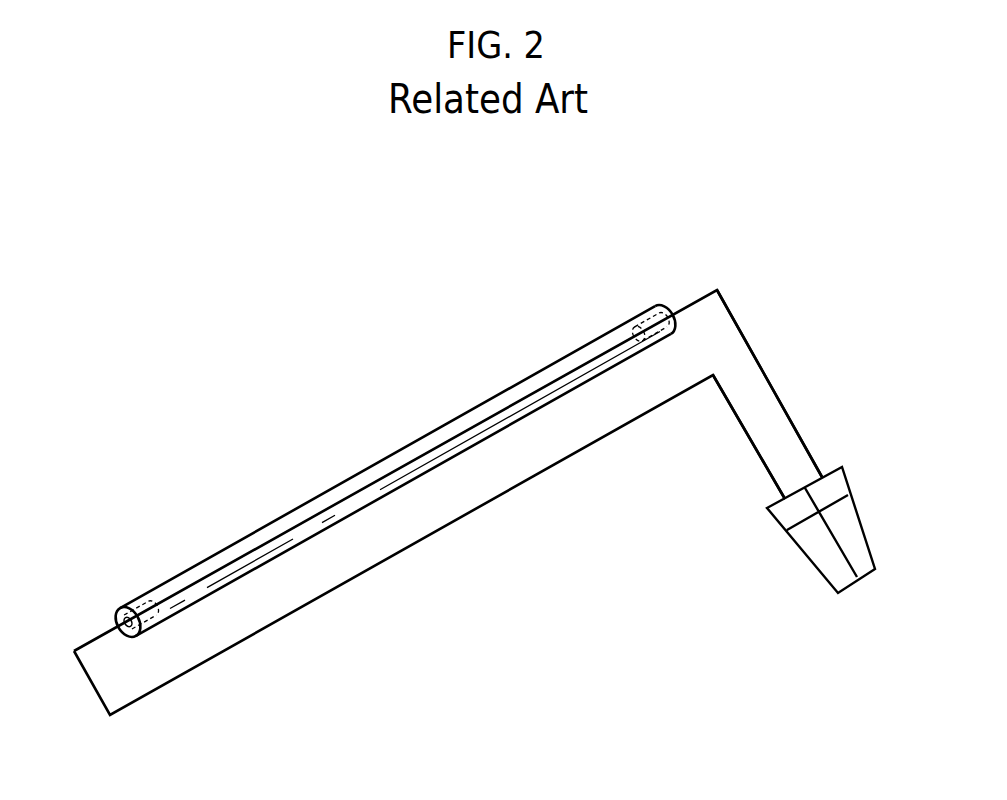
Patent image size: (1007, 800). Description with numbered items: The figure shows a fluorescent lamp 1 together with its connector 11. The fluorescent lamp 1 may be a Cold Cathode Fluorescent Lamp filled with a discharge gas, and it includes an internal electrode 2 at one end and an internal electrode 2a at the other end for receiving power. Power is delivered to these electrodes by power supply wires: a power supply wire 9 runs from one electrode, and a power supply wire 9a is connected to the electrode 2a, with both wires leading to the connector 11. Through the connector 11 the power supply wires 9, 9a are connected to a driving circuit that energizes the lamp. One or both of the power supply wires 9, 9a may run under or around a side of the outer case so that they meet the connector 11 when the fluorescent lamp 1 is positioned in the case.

The fluorescent lamp 1 is at (407, 450).
The internal electrode 2 is at (137, 598).
The internal electrode 2a is at (643, 320).
The power supply wire 9 is at (743, 432).
The power supply wire 9a is at (757, 357).
The connector 11 is at (812, 548).